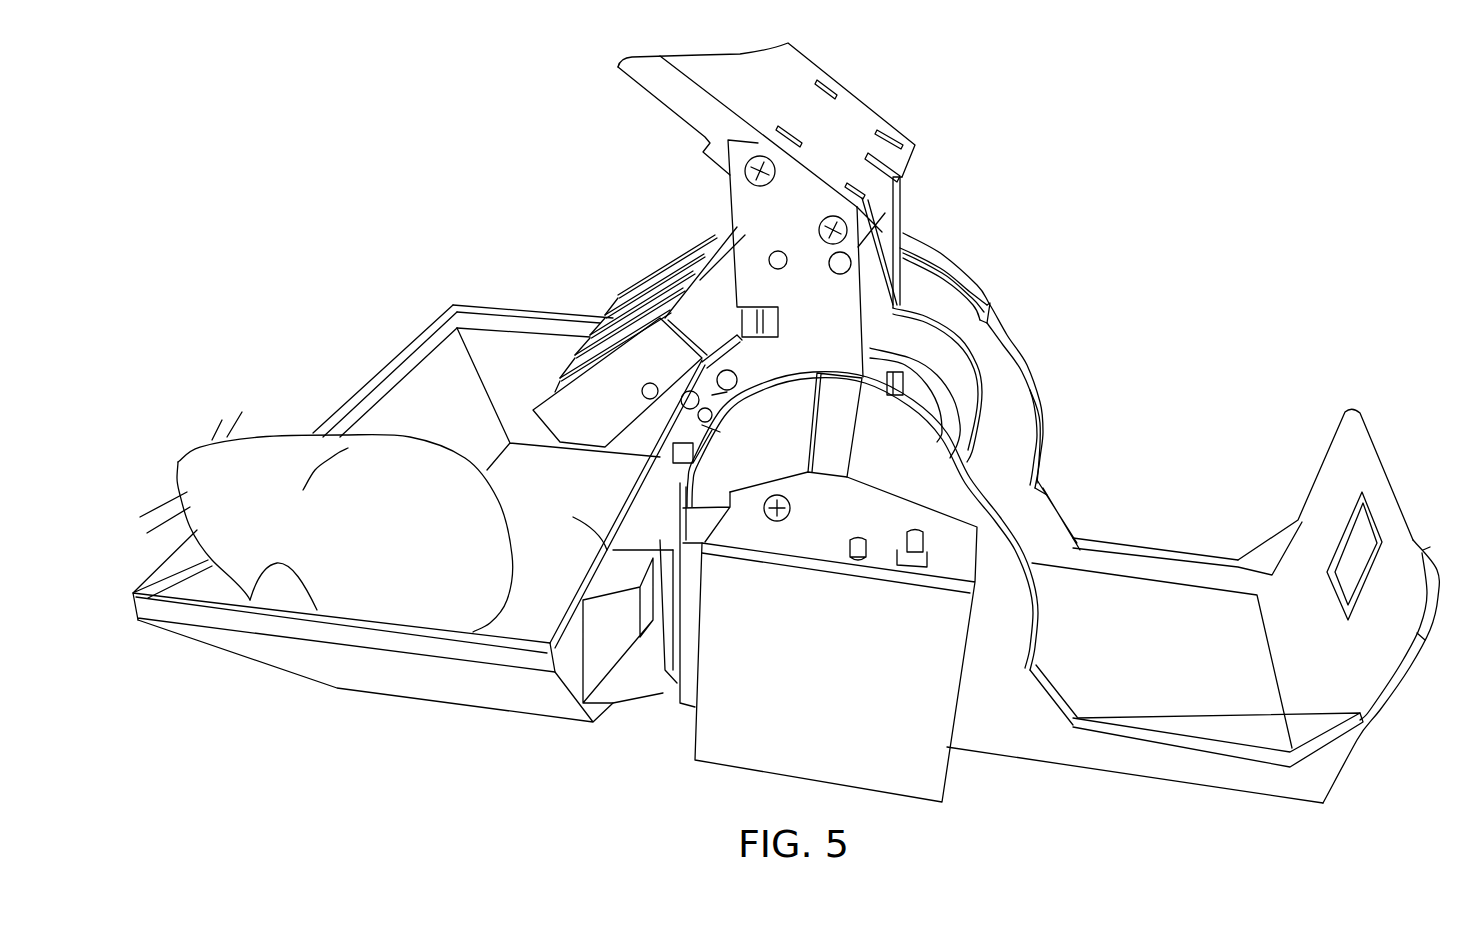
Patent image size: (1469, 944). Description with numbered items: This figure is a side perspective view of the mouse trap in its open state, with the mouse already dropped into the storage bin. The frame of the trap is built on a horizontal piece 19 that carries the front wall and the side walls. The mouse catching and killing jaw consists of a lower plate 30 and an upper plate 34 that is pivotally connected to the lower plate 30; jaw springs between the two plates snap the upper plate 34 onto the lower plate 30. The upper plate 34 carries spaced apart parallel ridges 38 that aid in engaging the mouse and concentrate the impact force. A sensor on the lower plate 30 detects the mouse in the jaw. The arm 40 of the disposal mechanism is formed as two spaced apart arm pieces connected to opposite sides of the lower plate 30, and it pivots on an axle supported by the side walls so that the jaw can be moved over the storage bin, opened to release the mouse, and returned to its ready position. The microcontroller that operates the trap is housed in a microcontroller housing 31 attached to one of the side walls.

The horizontal piece 19 is at (1166, 771).
The lower plate 30 is at (647, 73).
The microcontroller housing 31 is at (928, 773).
The upper plate 34 is at (700, 265).
The ridges 38 is at (633, 287).
The arm 40 is at (893, 227).